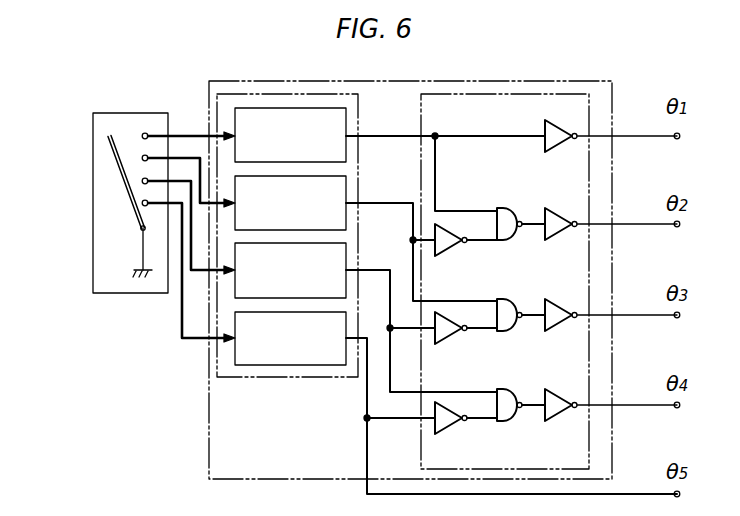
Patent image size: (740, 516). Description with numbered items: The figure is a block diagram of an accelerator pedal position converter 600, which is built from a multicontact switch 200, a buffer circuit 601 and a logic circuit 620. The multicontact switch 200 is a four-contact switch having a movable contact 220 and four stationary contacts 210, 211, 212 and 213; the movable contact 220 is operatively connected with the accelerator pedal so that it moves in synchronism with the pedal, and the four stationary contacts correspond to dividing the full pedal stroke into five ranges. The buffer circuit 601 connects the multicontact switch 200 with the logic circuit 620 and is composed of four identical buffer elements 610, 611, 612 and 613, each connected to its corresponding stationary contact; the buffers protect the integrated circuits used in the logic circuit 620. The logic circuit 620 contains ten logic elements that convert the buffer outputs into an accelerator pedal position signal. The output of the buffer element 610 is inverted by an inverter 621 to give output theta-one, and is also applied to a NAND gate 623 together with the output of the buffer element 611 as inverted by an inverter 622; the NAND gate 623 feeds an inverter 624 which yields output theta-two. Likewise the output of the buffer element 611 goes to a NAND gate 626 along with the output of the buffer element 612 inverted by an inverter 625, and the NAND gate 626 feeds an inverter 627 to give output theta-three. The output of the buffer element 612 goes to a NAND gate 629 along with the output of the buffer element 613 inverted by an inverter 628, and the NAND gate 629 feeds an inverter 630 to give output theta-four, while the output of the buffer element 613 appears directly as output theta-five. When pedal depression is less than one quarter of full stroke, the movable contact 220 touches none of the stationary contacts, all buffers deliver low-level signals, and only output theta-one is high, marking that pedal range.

The multicontact switch 200 is at (93, 272).
The stationary contact 210 is at (144, 134).
The stationary contact 211 is at (144, 156).
The stationary contact 212 is at (142, 181).
The stationary contact 213 is at (142, 203).
The movable contact 220 is at (110, 146).
The accelerator pedal position converter 600 is at (221, 81).
The buffer circuit 601 is at (306, 94).
The buffer element 610 is at (346, 118).
The buffer element 611 is at (346, 186).
The buffer element 612 is at (346, 255).
The buffer element 613 is at (305, 365).
The logic circuit 620 is at (490, 94).
The inverter 621 is at (545, 128).
The inverter 622 is at (452, 254).
The NAND gate 623 is at (507, 208).
The inverter 624 is at (562, 196).
The inverter 625 is at (450, 343).
The NAND gate 626 is at (515, 293).
The inverter 627 is at (562, 293).
The inverter 628 is at (440, 434).
The NAND gate 629 is at (518, 381).
The inverter 630 is at (563, 381).